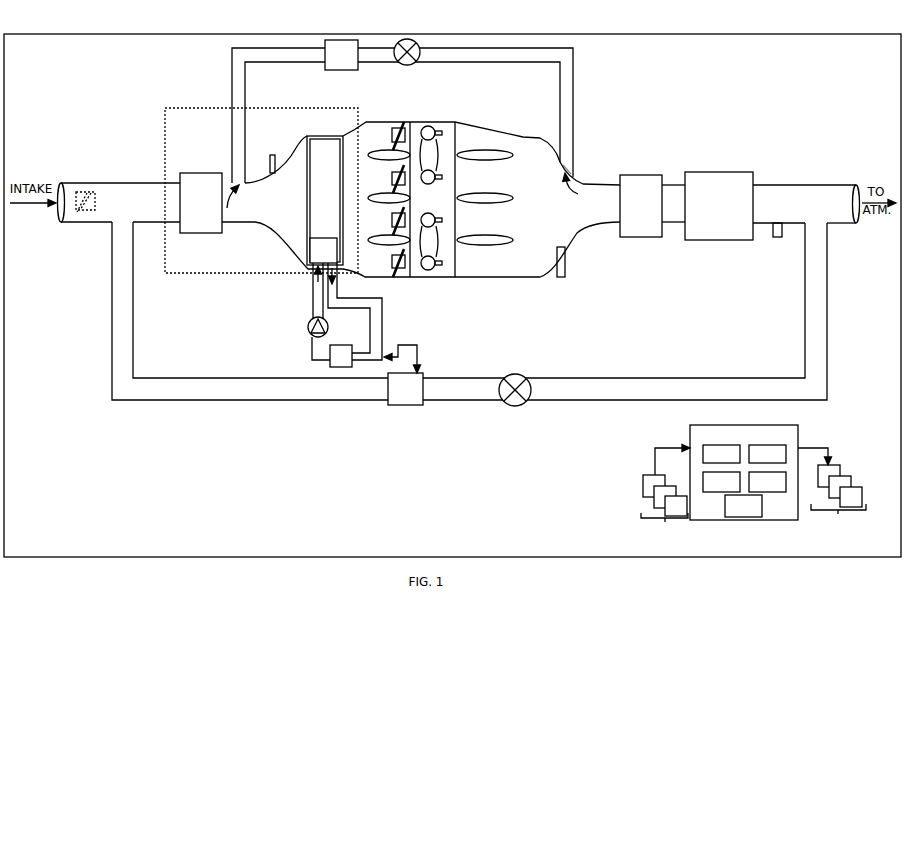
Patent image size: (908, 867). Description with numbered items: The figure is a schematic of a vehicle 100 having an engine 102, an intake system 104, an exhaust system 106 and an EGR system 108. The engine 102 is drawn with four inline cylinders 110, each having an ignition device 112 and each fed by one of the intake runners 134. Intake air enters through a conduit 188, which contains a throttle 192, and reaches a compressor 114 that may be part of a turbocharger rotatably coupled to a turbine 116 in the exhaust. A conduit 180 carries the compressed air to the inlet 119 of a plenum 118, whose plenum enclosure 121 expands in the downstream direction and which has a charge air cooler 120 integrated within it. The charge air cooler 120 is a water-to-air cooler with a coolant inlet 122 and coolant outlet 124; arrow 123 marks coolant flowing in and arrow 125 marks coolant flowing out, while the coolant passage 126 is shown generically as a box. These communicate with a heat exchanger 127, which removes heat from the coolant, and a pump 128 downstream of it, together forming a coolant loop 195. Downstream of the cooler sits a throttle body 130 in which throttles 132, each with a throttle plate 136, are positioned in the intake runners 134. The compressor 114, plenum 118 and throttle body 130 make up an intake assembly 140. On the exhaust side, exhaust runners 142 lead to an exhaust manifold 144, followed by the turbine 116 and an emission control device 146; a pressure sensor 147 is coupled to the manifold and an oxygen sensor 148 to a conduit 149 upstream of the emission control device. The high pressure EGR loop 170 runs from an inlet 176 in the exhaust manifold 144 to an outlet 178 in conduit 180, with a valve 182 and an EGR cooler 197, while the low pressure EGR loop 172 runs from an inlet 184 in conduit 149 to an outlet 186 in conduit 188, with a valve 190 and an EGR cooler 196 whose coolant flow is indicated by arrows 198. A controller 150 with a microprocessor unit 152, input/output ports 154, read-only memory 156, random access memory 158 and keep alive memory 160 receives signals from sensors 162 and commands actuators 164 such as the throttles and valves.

The vehicle 100 is at (22, 35).
The engine 102 is at (421, 121).
The intake system 104 is at (136, 122).
The exhaust system 106 is at (722, 98).
The exhaust gas recirculation (EGR) system 108 is at (208, 59).
The cylinders 110 is at (424, 198).
The ignition device 112 is at (444, 198).
The compressor 114 is at (190, 209).
The turbine 116 is at (630, 212).
The plenum 118 is at (308, 136).
The inlet 119 is at (241, 197).
The charge air cooler 120 is at (313, 209).
The plenum enclosure 121 is at (272, 212).
The coolant inlet 122 is at (313, 288).
The arrow 123 is at (312, 274).
The coolant outlet 124 is at (338, 287).
The arrow 125 is at (338, 272).
The coolant passage 126 is at (324, 238).
The heat exchanger 127 is at (272, 155).
The pump 128 is at (309, 328).
The throttle body 130 is at (378, 121).
The throttles 132 is at (412, 121).
The intake runners 134 is at (388, 143).
The throttle plate 136 is at (402, 121).
The intake assembly 140 is at (195, 107).
The exhaust runners 142 is at (486, 143).
The exhaust manifold 144 is at (541, 214).
The emission control device 146 is at (708, 212).
The pressure sensor 147 is at (565, 258).
The oxygen sensor 148 is at (773, 229).
The conduit 149 is at (805, 184).
The controller 150 is at (735, 440).
The microprocessor unit 152 is at (710, 460).
The input/output ports 154 is at (710, 488).
The read-only memory 156 is at (756, 460).
The random access memory 158 is at (756, 488).
The keep alive memory 160 is at (732, 512).
The sensors 162 is at (665, 498).
The actuators 164 is at (833, 496).
The high pressure EGR loop 170 is at (573, 68).
The low pressure EGR loop 172 is at (623, 377).
The inlet 176 is at (583, 188).
The outlet 178 is at (234, 214).
The conduit 180 is at (231, 223).
The valve 182 is at (414, 63).
The inlet 184 is at (816, 214).
The outlet 186 is at (121, 216).
The conduit 188 is at (143, 182).
The valve 190 is at (512, 375).
The throttle 192 is at (86, 191).
The coolant loop 195 is at (412, 310).
The EGR cooler 196 is at (395, 396).
The EGR cooler 197 is at (330, 62).
The arrows 198 is at (393, 345).